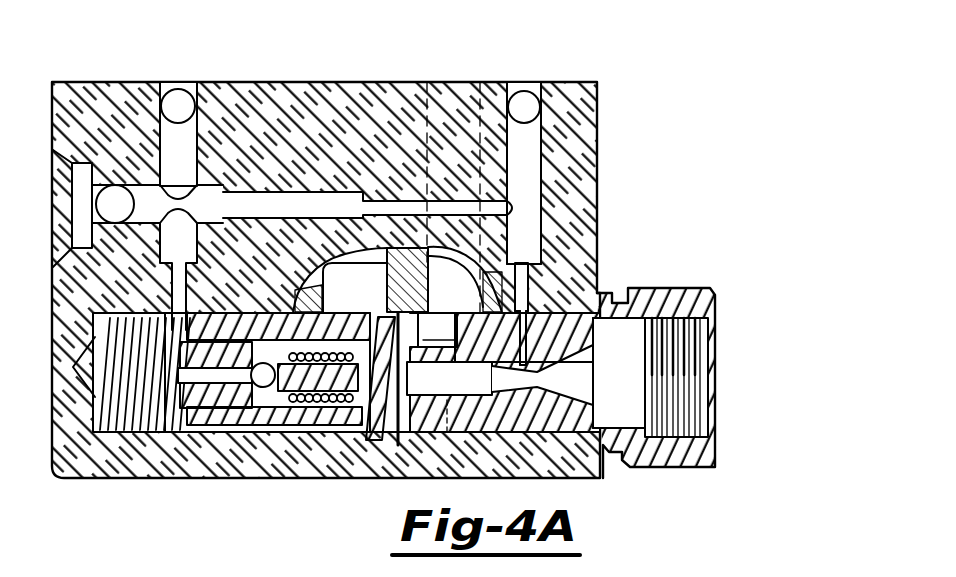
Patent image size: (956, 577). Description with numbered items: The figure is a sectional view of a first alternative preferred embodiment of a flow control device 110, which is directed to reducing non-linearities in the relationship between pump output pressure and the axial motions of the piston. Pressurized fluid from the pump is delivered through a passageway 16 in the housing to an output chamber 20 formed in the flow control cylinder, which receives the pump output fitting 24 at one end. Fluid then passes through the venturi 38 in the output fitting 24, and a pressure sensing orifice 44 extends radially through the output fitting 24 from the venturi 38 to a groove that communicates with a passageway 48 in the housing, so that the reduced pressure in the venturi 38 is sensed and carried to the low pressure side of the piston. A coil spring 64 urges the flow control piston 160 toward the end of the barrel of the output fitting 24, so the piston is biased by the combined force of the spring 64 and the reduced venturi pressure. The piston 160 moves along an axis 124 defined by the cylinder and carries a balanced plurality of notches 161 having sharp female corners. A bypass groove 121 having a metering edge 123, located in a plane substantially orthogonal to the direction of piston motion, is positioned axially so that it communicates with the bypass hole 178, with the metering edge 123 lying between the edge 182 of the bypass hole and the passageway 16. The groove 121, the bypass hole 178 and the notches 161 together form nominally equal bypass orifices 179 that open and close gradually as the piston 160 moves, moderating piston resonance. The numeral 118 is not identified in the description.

The flow control device 110 is at (614, 130).
The housing wall 118 is at (597, 207).
The passageway 16 is at (427, 83).
The bypass hole 178 is at (322, 262).
The metering edge 123 is at (405, 290).
The coil spring 64 is at (146, 458).
The flow control piston 160 is at (250, 445).
The bypass groove 121 is at (385, 447).
The bypass orifice 179 is at (387, 312).
The notches 161 is at (423, 338).
The edge of the bypass hole 182 is at (415, 370).
The venturi 38 is at (540, 376).
The output chamber 20 is at (548, 302).
The passageway 48 is at (560, 300).
The pump output fitting 24 is at (713, 312).
The axis 124 is at (722, 398).
The pressure sensing orifice 44 is at (545, 332).